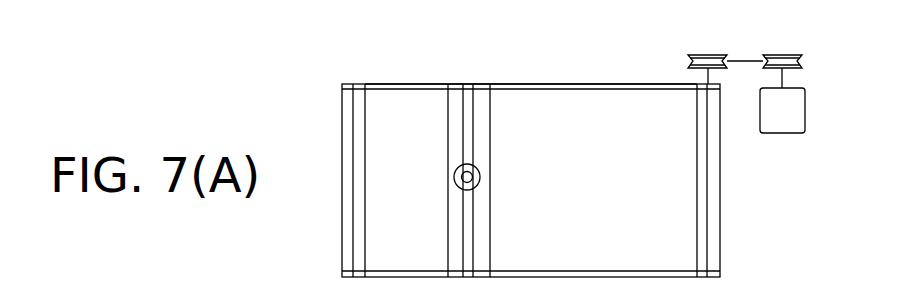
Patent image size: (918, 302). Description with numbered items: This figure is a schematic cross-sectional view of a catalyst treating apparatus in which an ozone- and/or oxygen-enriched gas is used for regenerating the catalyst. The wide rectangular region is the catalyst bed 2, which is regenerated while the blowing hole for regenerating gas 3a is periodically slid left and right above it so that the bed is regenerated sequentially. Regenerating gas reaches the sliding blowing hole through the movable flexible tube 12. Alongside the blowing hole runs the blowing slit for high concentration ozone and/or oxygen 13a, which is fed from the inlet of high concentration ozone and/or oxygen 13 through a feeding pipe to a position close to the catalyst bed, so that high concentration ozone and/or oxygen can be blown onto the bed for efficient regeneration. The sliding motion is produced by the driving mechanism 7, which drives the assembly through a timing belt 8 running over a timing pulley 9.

The catalyst bed 2 is at (672, 250).
The blowing hole for regenerating gas 3a is at (453, 85).
The driving mechanism 7 is at (780, 133).
The timing belt 8 is at (588, 84).
The timing pulley 9 is at (341, 88).
The flexible tube 12 is at (455, 181).
The inlet of high concentration ozone and/or oxygen 13 is at (478, 177).
The blowing slit for high concentration ozone and/or oxygen 13a is at (470, 85).